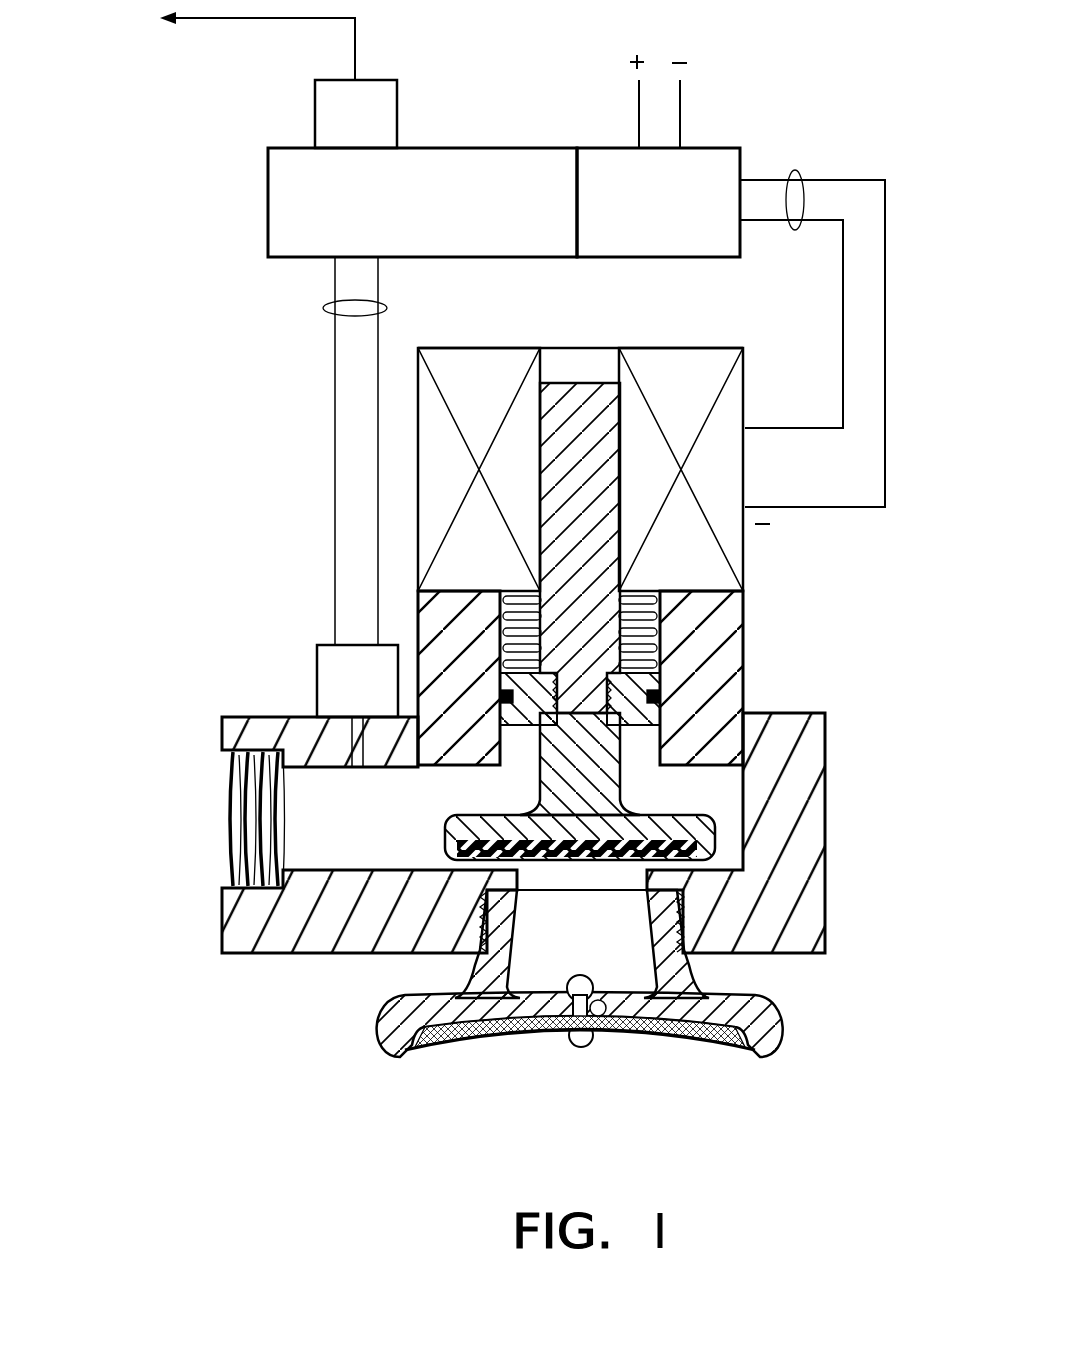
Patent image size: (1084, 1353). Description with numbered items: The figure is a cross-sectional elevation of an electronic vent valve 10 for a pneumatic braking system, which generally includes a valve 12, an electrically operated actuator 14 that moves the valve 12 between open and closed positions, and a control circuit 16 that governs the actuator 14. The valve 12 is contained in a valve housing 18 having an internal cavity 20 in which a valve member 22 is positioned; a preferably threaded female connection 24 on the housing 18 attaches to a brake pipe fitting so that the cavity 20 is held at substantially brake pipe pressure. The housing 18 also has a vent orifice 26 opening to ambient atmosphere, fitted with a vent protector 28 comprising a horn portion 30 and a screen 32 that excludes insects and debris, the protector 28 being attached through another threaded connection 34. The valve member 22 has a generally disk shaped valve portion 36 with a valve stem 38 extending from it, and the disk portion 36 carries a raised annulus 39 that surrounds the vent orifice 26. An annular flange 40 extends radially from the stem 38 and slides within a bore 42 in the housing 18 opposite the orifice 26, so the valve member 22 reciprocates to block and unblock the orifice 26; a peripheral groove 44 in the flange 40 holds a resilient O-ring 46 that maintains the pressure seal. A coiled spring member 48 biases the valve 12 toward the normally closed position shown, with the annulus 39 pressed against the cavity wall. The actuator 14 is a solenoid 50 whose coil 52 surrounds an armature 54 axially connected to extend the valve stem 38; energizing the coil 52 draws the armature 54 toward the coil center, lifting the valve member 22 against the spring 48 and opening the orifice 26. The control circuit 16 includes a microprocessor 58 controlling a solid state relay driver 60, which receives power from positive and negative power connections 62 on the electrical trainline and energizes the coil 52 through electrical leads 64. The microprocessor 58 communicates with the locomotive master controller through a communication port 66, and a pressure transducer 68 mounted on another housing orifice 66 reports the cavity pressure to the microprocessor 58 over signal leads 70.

The electronic vent valve 10 is at (967, 658).
The valve 12 is at (736, 807).
The electrically operated actuator 14 is at (780, 553).
The control circuit 16 is at (262, 288).
The valve housing 18 is at (242, 962).
The internal cavity 20 is at (280, 745).
The valve member 22 is at (740, 833).
The threaded female connection 24 is at (224, 862).
The vent orifice 26 is at (626, 881).
The vent protector 28 is at (800, 1005).
The horn portion 30 is at (390, 1038).
The screen 32 is at (433, 1050).
The threaded connection 34 is at (485, 907).
The generally disk shaped valve portion 36 is at (700, 850).
The valve stem 38 is at (607, 778).
The raised annulus 39 is at (440, 835).
The annular flange 40 is at (668, 672).
The bore 42 is at (657, 646).
The peripheral groove 44 is at (660, 698).
The resilient O-ring 46 is at (515, 735).
The coiled spring member 48 is at (600, 614).
The solenoid 50 is at (762, 370).
The coil 52 is at (735, 472).
The armature 54 is at (580, 395).
The microprocessor 58 is at (292, 148).
The solid state relay driver 60 is at (712, 148).
The positive and negative power connections 62 is at (655, 55).
The electrical leads 64 is at (797, 175).
The communication port 66 is at (397, 105).
The pressure transducer 68 is at (322, 647).
The signal leads 70 is at (388, 306).